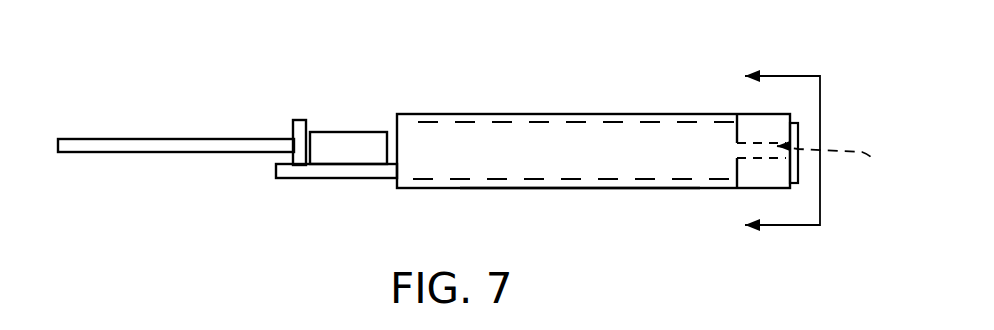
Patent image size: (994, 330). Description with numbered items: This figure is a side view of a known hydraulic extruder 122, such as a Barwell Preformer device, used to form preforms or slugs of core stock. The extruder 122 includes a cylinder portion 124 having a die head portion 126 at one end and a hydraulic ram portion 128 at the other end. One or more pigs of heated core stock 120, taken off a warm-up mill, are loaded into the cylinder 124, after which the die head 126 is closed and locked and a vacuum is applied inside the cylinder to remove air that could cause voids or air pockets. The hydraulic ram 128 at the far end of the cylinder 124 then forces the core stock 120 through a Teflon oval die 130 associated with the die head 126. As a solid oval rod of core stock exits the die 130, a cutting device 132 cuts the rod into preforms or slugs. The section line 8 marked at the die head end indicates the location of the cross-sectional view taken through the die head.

The section line 8- 8 is at (773, 149).
The pig of heated core stock 120 is at (332, 135).
The hydraulic extruder 122 is at (507, 87).
The cylinder portion 124 is at (542, 187).
The die head portion 126 is at (750, 122).
The hydraulic ram portion 128 is at (176, 149).
The Teflon oval die 130 is at (839, 163).
The cutting device 132 is at (797, 130).